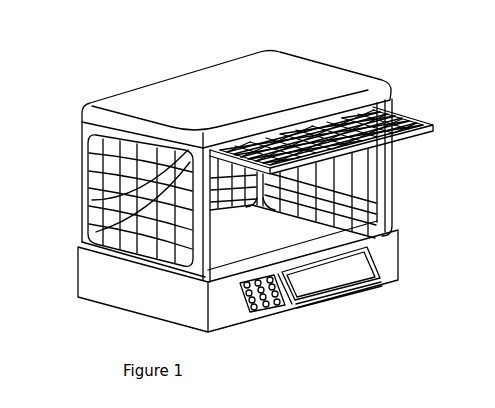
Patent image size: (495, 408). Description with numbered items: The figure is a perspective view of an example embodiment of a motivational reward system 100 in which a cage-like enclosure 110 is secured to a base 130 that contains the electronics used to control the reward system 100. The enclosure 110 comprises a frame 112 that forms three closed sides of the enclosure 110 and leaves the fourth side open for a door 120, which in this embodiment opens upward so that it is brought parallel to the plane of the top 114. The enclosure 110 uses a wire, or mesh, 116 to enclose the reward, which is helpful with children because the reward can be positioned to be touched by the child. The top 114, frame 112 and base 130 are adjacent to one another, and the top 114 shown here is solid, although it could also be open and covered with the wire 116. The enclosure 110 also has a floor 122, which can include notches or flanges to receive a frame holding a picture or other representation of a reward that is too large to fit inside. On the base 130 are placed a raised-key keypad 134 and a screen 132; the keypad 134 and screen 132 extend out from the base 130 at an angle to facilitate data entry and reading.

The reward system 100 is at (392, 42).
The enclosure 110 is at (390, 183).
The frame 112 is at (83, 156).
The top 114 is at (236, 100).
The wire or mesh 116 is at (87, 207).
The door 120 is at (433, 122).
The floor 122 is at (292, 237).
The base 130 is at (402, 263).
The screen 132 is at (338, 292).
The keypad 134 is at (258, 314).